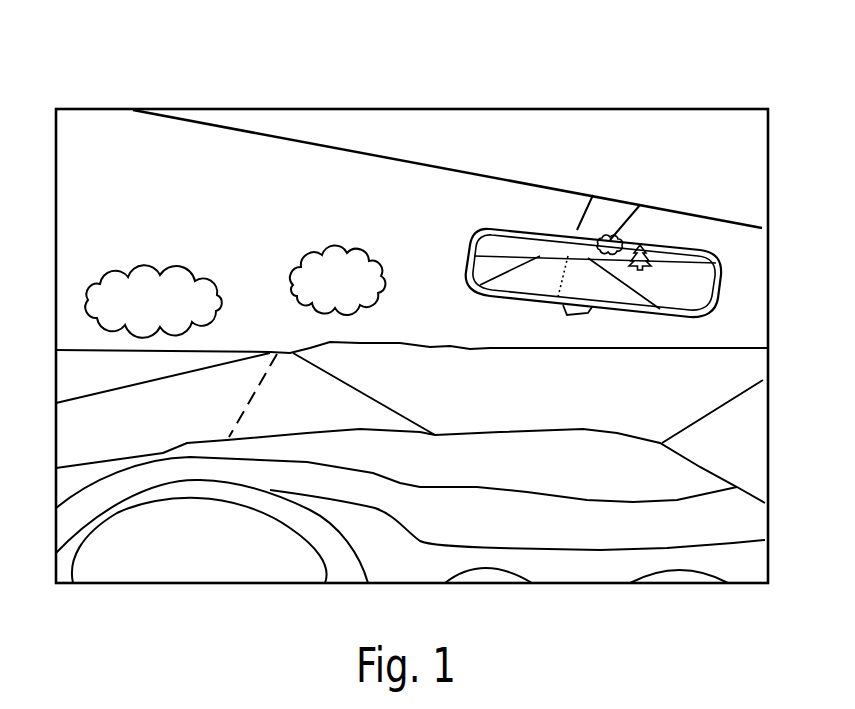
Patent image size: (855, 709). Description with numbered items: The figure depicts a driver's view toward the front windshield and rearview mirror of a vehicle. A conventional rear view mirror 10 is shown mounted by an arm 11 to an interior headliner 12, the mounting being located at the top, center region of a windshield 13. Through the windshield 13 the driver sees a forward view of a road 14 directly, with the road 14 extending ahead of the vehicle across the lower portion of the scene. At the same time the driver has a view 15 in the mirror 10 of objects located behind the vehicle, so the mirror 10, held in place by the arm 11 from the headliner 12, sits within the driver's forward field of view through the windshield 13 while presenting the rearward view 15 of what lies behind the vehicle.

The rear view mirror 10 is at (462, 246).
The arm 11 is at (583, 214).
The interior headliner 12 is at (615, 128).
The windshield 13 is at (207, 158).
The road 14 is at (246, 368).
The view 15 is at (662, 277).